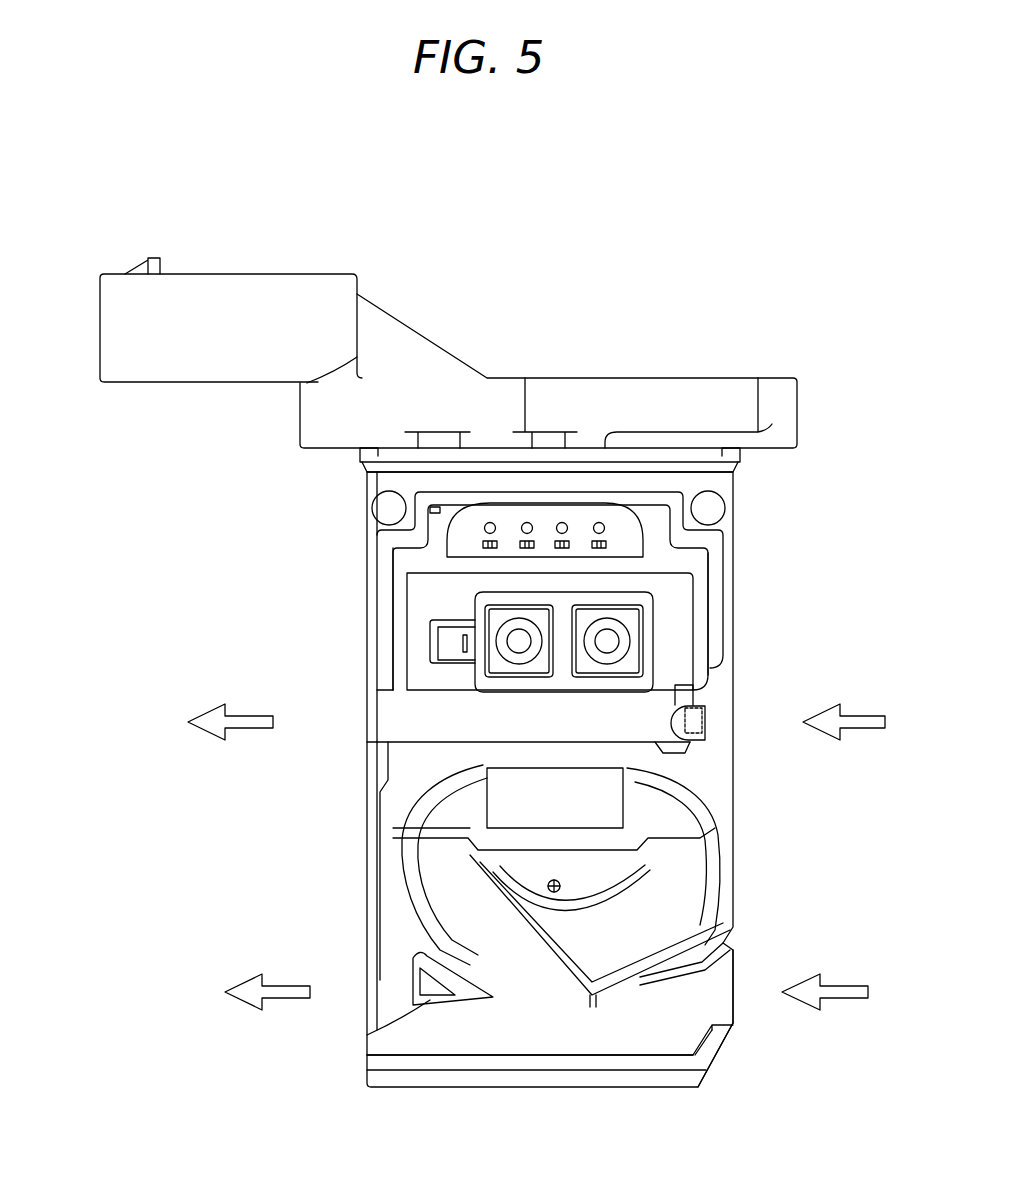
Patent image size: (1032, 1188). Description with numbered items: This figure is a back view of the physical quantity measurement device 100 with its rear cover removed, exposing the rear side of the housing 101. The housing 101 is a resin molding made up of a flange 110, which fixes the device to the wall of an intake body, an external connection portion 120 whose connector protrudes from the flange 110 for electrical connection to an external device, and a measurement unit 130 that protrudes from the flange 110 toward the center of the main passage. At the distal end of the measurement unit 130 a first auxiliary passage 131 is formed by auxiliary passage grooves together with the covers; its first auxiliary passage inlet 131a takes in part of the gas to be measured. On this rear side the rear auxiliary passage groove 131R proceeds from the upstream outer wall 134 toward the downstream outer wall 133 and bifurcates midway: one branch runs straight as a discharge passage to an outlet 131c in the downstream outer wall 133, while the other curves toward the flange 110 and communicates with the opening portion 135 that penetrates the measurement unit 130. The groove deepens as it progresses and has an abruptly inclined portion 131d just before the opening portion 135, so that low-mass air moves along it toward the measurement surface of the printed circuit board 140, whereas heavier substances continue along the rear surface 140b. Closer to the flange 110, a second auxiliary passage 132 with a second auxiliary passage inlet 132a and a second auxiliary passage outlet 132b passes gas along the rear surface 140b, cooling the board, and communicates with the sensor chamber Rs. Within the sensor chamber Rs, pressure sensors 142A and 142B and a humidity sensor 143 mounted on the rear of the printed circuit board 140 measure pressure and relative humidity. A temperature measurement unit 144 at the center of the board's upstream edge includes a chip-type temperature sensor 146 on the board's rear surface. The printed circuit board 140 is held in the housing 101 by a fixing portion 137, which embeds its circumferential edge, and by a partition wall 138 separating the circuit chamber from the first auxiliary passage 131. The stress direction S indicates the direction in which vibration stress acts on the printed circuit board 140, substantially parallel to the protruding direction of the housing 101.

The physical quantity measurement device 100 is at (730, 223).
The housing 101 is at (183, 440).
The flange 110 is at (292, 407).
The external connection portion 120 is at (215, 390).
The measurement unit 130 is at (362, 482).
The first auxiliary passage 131 is at (738, 981).
The first auxiliary passage inlet 131a is at (735, 1012).
The outlet 131c is at (370, 1040).
The abruptly inclined portion 131d is at (443, 875).
The rear auxiliary passage groove 131R is at (553, 1030).
The second auxiliary passage 132 is at (712, 730).
The second auxiliary passage inlet 132a is at (690, 752).
The second auxiliary passage outlet 132b is at (375, 748).
The downstream outer wall 133 is at (362, 586).
The upstream outer wall 134 is at (734, 550).
The opening portion 135 is at (445, 813).
The fixing portion 137 is at (380, 640).
The partition wall 138 is at (548, 768).
The printed circuit board 140 is at (682, 597).
The rear surface 140b is at (612, 815).
The pressure sensor 142A is at (607, 678).
The pressure sensor 142B is at (517, 678).
The humidity sensor 143 is at (443, 648).
The temperature measurement unit 144 is at (690, 712).
The temperature sensor 146 is at (703, 720).
The sensor chamber Rs is at (676, 636).
The stress direction S is at (78, 580).